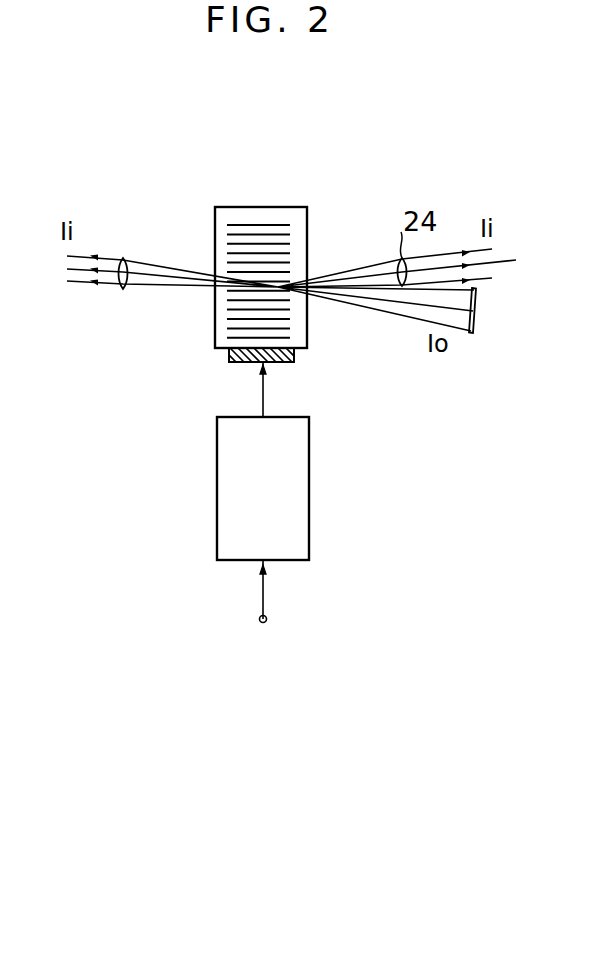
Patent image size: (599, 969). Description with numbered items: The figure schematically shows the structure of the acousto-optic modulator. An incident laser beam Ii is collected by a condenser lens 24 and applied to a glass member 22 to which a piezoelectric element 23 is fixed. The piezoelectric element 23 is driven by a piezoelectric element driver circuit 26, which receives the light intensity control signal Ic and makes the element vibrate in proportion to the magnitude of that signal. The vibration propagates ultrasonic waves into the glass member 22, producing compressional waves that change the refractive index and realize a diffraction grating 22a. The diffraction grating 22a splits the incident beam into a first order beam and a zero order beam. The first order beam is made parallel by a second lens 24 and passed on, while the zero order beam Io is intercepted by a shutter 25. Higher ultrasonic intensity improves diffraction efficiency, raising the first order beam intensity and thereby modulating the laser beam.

The glass member 22 is at (297, 207).
The diffraction grating 22a is at (237, 222).
The piezoelectric element 23 is at (236, 362).
The lens 24 is at (122, 289).
The shutter 25 is at (473, 333).
The piezoelectric element driver circuit 26 is at (309, 488).